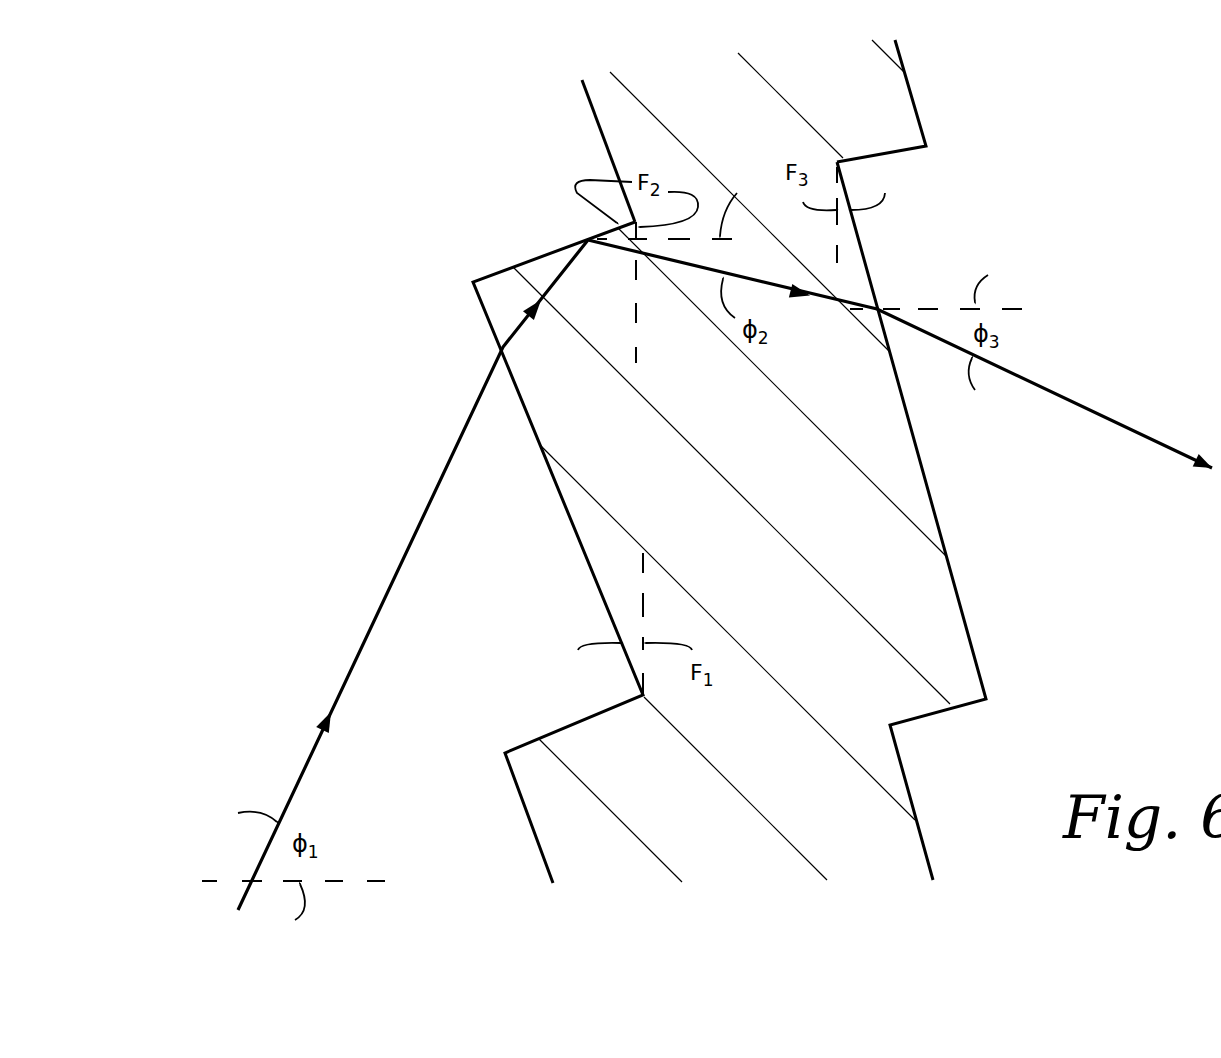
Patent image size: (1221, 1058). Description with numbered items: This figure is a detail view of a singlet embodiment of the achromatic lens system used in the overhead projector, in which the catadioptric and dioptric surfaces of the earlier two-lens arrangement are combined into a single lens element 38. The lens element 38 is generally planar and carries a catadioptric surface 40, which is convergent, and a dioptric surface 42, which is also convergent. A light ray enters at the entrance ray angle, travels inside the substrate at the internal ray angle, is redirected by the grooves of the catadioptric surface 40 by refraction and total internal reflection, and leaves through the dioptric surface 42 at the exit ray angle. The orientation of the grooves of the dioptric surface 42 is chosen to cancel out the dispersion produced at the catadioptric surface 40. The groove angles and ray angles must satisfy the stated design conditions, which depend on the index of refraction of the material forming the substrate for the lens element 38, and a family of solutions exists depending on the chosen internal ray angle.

The single lens element 38 is at (880, 133).
The catadioptric surface 40 is at (540, 442).
The dioptric surface 42 is at (963, 597).